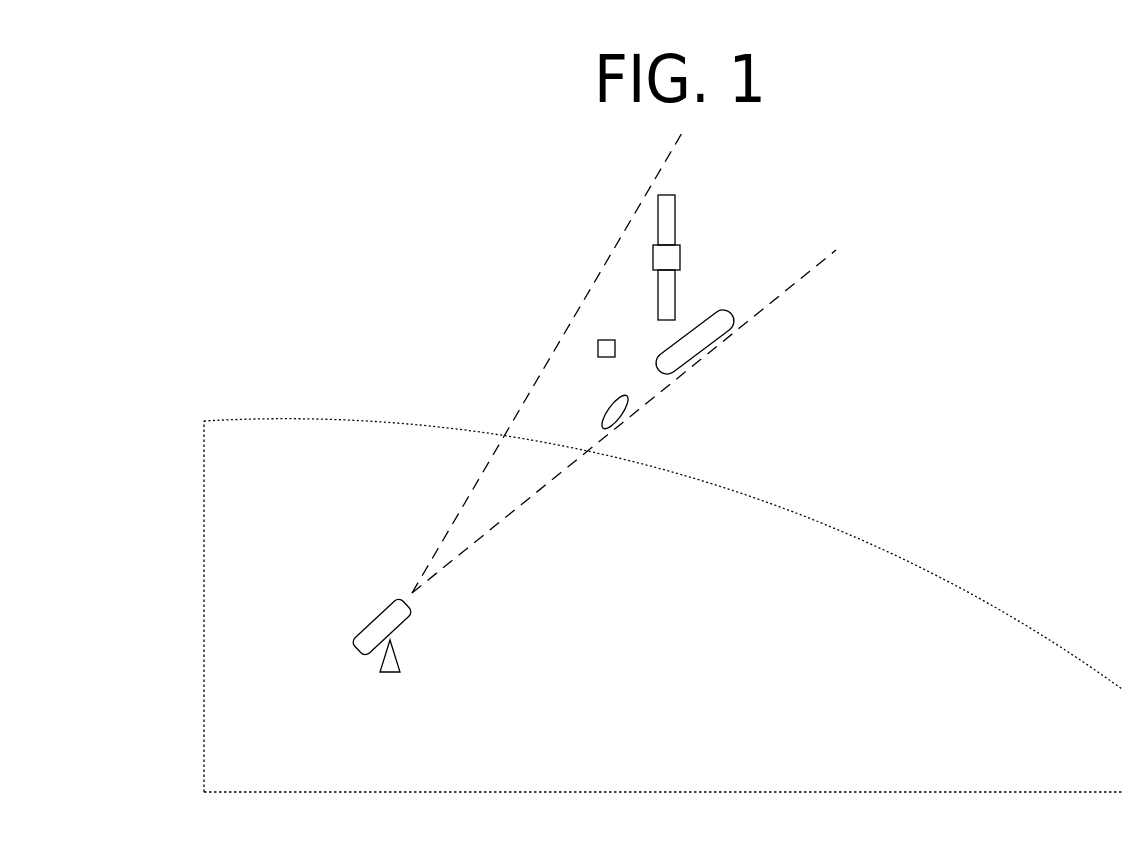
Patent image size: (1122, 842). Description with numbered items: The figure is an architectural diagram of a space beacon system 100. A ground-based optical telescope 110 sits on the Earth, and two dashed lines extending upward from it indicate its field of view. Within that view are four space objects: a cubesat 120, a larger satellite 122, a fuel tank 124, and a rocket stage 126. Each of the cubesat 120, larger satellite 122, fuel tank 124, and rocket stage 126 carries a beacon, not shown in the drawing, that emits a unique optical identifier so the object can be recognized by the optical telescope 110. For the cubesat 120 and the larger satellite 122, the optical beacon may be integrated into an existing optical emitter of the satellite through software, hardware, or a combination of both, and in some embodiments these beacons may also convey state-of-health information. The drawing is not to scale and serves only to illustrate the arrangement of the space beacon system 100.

The space beacon system 100 is at (262, 131).
The optical telescope 110 is at (373, 615).
The cubesat 120 is at (598, 343).
The larger satellite 122 is at (653, 257).
The fuel tank 124 is at (620, 415).
The rocket stage 126 is at (705, 352).